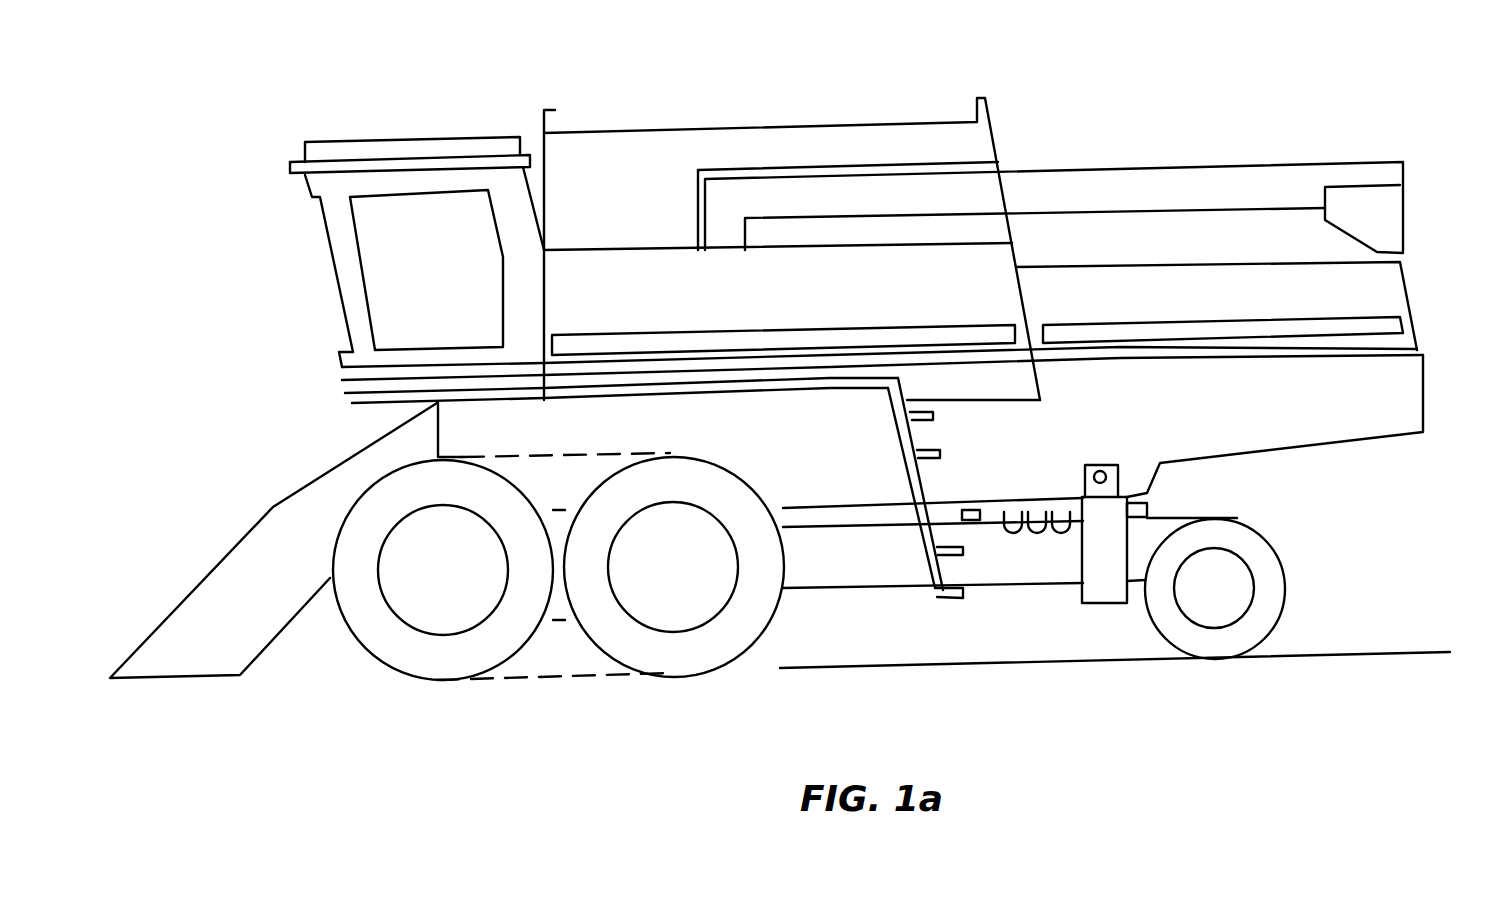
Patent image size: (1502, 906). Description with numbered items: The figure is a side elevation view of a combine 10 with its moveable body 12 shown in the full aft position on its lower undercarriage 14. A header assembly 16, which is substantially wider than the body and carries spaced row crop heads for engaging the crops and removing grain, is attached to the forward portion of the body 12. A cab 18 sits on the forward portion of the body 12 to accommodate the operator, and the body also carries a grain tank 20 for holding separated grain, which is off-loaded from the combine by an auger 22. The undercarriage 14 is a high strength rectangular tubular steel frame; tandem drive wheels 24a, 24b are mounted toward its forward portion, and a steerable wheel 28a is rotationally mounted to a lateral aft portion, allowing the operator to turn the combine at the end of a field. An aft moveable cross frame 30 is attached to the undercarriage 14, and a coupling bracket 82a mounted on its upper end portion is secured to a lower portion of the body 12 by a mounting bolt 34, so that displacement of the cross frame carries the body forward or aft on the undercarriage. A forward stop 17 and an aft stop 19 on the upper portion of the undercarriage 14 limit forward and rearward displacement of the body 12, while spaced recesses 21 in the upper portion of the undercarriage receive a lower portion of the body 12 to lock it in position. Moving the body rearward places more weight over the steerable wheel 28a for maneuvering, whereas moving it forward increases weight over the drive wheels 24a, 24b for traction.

The combine 10 is at (1206, 108).
The combine body 12 is at (1410, 304).
The undercarriage 14 is at (1036, 579).
The header assembly 16 is at (212, 572).
The forward stop 17 is at (968, 510).
The cab 18 is at (332, 253).
The aft stop 19 is at (1150, 507).
The grain tank 20 is at (762, 128).
The spaced recesses 21 is at (1062, 512).
The auger 22 is at (1092, 190).
The tandem drive wheel 24a is at (440, 660).
The tandem drive wheel 24b is at (697, 650).
The steerable wheel 28a is at (1220, 642).
The aft moveable cross frame 30 is at (1105, 588).
The mounting bolt 34 is at (1104, 471).
The coupling bracket 82a is at (1085, 470).